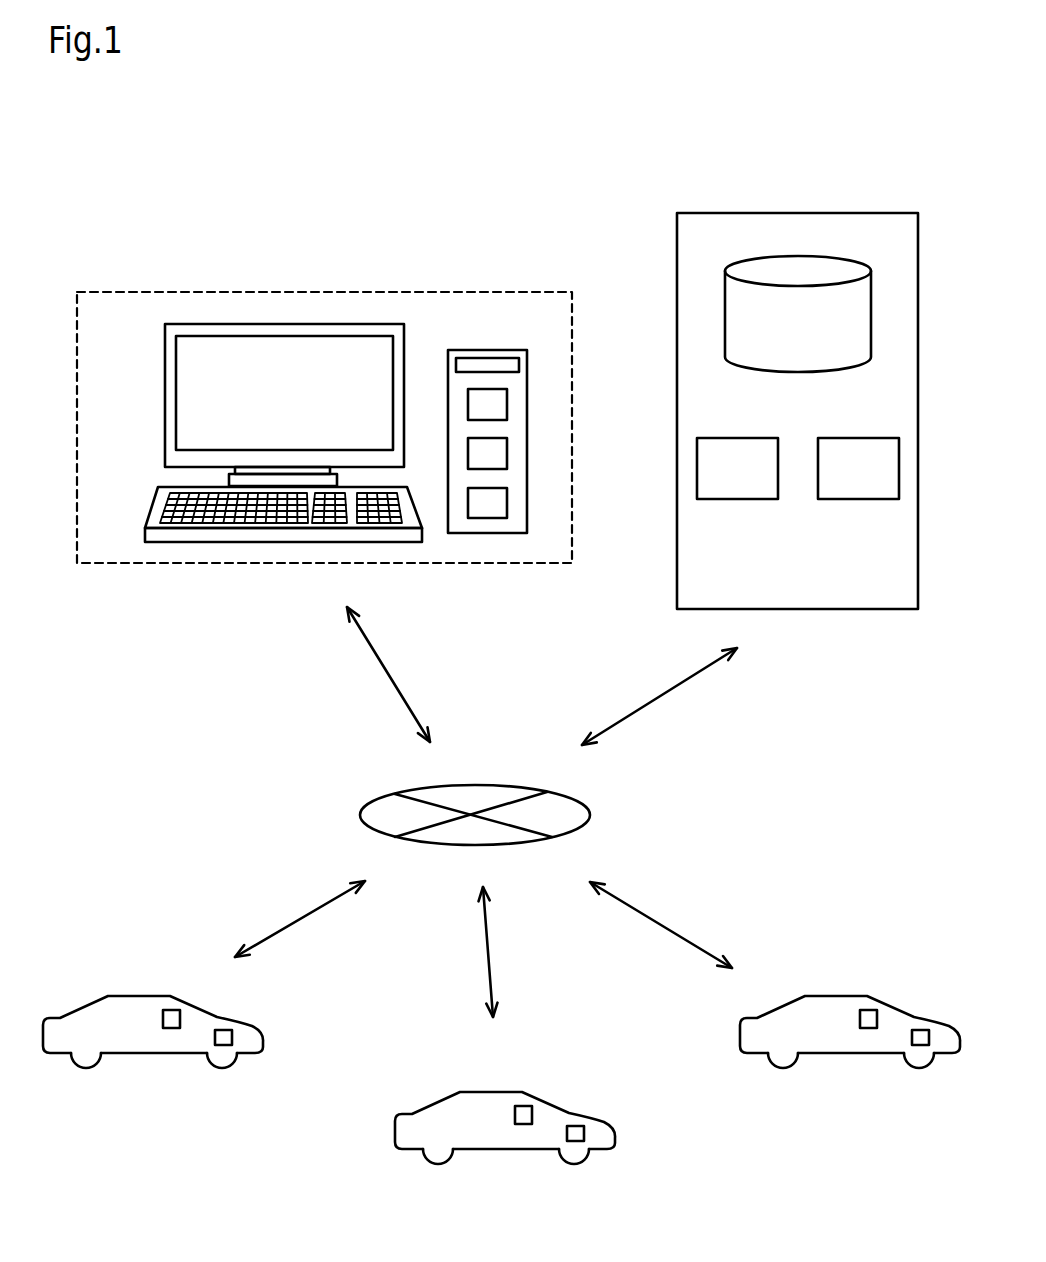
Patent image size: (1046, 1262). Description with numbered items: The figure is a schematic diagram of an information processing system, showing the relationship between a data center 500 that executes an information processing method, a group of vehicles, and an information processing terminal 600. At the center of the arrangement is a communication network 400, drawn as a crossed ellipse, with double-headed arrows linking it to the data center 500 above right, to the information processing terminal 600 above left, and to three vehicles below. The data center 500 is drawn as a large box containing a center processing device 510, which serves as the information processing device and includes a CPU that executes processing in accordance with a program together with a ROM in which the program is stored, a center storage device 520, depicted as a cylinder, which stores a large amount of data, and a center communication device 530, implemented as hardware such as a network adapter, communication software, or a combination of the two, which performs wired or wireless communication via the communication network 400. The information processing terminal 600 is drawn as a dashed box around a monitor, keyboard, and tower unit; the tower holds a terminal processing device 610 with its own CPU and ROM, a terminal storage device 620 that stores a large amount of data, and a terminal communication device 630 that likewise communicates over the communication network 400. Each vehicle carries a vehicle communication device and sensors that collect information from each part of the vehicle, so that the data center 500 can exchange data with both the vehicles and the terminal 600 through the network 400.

The communication network 400 is at (472, 785).
The data center 500 is at (795, 213).
The center processing device 510 is at (737, 499).
The center storage device 520 is at (798, 257).
The center communication device 530 is at (858, 499).
The information processing terminal 600 is at (325, 292).
The terminal processing device 610 is at (507, 403).
The terminal storage device 620 is at (507, 452).
The terminal communication device 630 is at (507, 500).